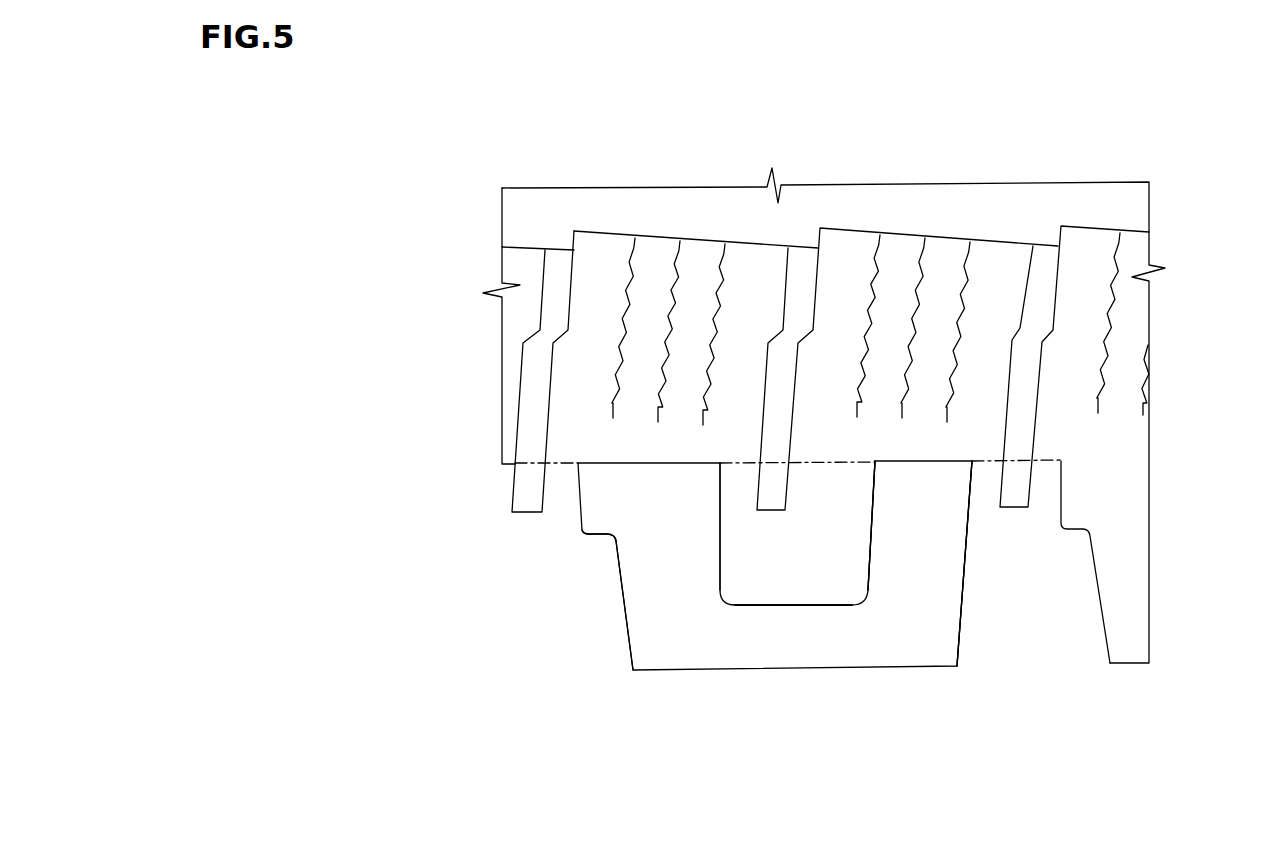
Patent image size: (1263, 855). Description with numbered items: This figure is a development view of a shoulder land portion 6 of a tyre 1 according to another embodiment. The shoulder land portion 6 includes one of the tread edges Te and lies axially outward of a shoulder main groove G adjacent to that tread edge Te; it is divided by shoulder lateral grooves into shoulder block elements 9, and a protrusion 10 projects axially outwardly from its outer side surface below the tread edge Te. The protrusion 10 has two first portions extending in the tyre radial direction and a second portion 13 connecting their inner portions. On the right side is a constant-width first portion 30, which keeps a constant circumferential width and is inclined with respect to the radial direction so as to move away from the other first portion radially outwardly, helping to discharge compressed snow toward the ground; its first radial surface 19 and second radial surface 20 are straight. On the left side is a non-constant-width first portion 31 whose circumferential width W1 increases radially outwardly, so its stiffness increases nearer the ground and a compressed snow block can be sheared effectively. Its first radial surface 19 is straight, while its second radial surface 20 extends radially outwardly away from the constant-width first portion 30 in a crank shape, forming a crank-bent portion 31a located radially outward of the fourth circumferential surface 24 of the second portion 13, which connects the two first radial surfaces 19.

The tyre 1 is at (393, 140).
The shoulder block element 9 is at (602, 265).
The fourth circumferential surface 24 is at (814, 605).
The shoulder land portion 6 is at (1130, 322).
The first radial surface 19 is at (720, 503).
The tread edge Te is at (1042, 460).
The shoulder main groove G is at (540, 217).
The crank-bent portion 31a is at (598, 535).
The circumferential width W1 is at (720, 558).
The second radial surface 20 is at (623, 622).
The non-constant-width first portion 31 is at (682, 610).
The constant-width first portion 30 is at (913, 597).
The second portion 13 is at (793, 677).
The protrusion 10 is at (775, 629).